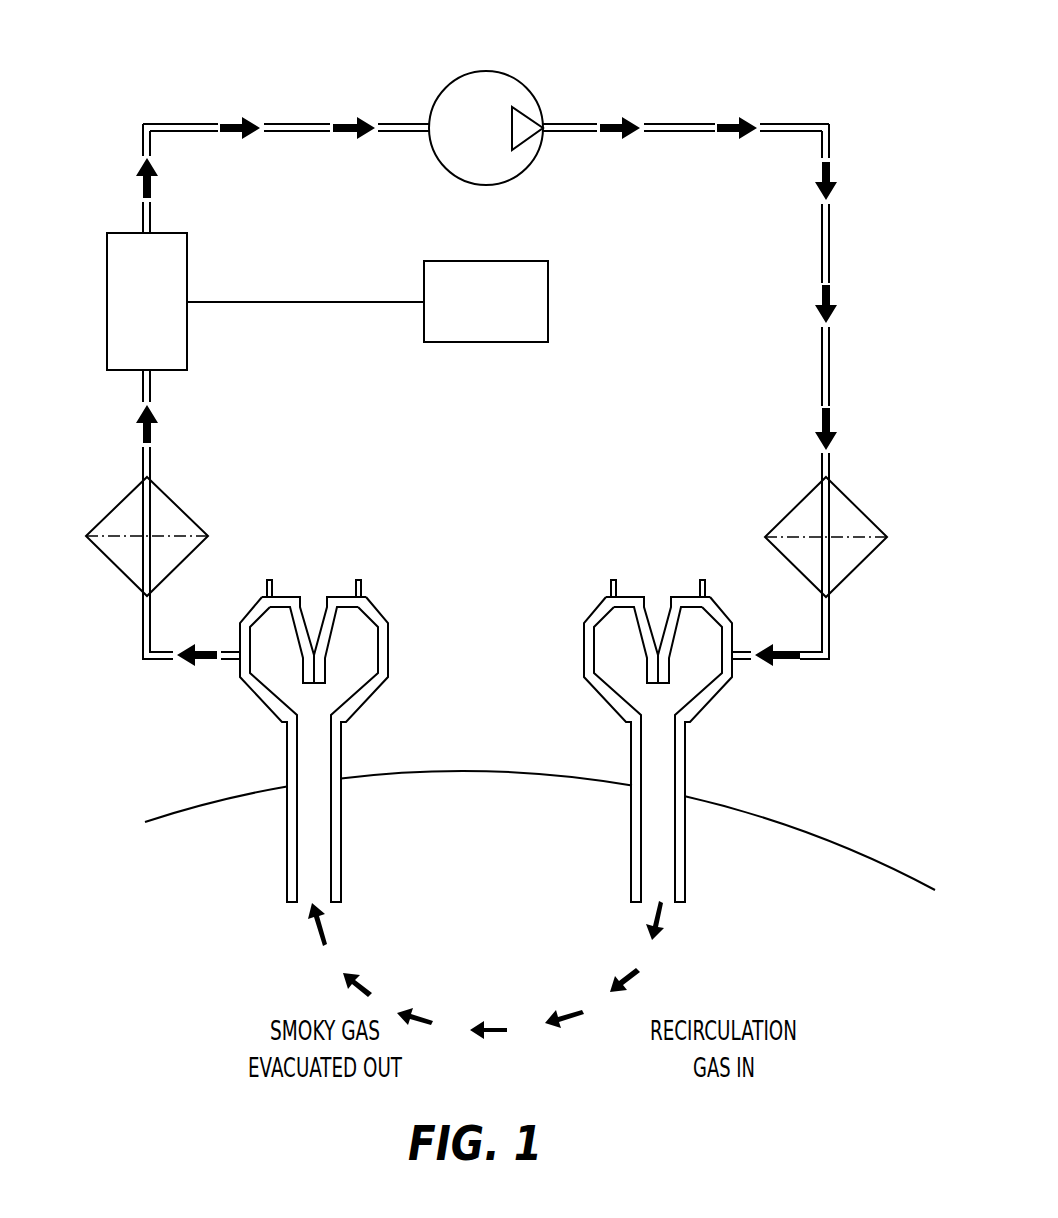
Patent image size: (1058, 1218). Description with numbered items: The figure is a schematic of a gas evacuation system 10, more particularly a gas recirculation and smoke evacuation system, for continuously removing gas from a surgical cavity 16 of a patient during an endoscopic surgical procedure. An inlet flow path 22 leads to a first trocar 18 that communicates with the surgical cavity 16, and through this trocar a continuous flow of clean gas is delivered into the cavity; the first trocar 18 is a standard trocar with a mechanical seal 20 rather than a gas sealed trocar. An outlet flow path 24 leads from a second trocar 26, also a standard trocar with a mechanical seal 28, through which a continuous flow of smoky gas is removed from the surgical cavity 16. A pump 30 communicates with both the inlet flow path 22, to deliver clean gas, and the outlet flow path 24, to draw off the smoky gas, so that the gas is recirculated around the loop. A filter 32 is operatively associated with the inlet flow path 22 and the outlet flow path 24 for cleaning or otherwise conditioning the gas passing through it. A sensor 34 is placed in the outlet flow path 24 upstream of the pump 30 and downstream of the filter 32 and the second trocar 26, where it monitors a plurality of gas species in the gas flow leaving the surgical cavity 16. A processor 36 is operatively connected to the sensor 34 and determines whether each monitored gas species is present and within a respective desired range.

The gas evacuation system 10 is at (163, 50).
The surgical cavity 16 is at (512, 800).
The first trocar 18 is at (685, 778).
The mechanical seal 20 is at (671, 669).
The inlet flow path 22 is at (860, 664).
The outlet flow path 24 is at (125, 640).
The second trocar 26 is at (343, 758).
The mechanical seal 28 is at (327, 670).
The pump 30 is at (528, 167).
The filter 32 is at (175, 498).
The sensor 34 is at (187, 280).
The processor 36 is at (502, 316).